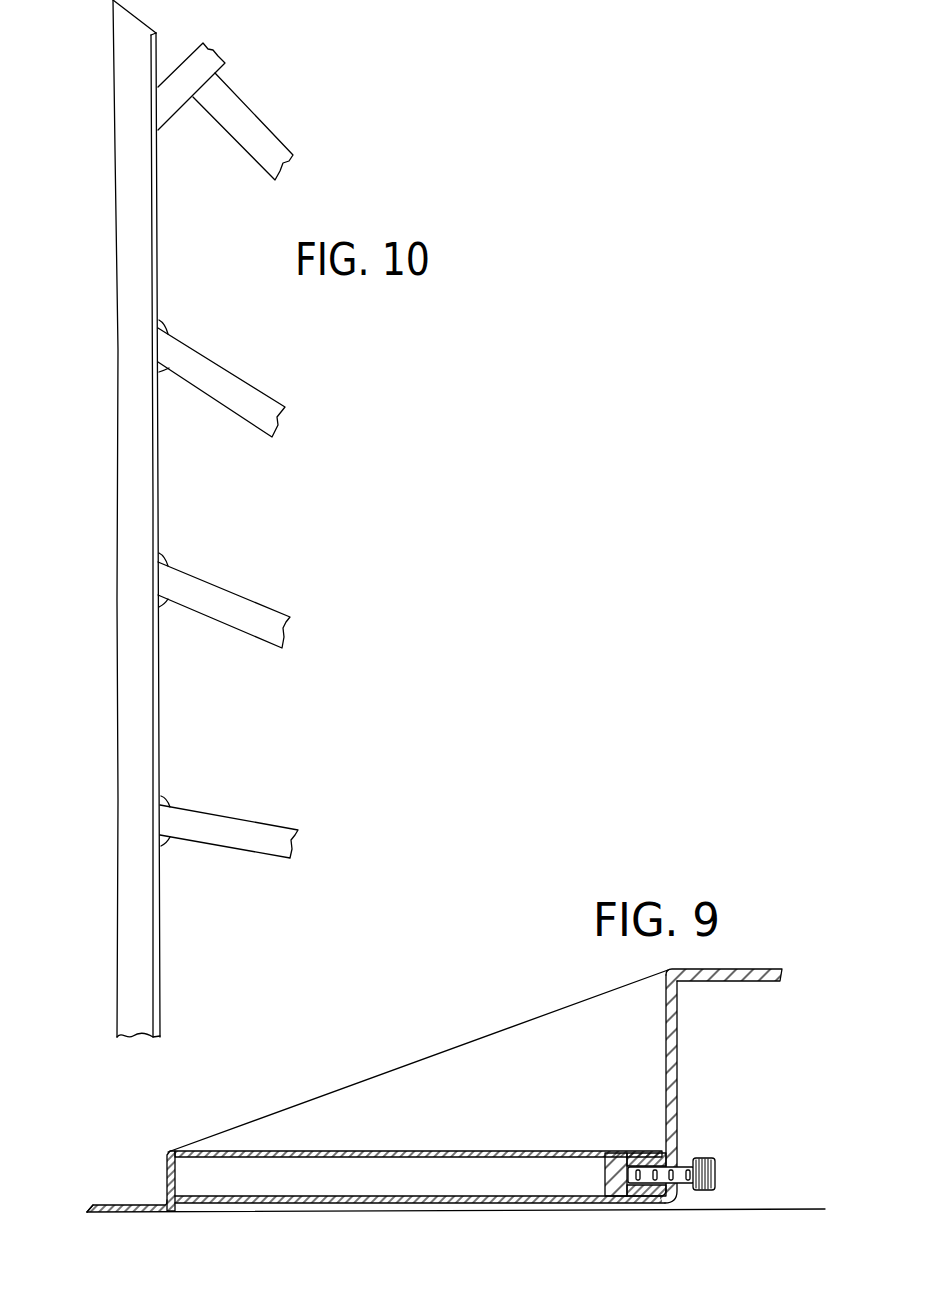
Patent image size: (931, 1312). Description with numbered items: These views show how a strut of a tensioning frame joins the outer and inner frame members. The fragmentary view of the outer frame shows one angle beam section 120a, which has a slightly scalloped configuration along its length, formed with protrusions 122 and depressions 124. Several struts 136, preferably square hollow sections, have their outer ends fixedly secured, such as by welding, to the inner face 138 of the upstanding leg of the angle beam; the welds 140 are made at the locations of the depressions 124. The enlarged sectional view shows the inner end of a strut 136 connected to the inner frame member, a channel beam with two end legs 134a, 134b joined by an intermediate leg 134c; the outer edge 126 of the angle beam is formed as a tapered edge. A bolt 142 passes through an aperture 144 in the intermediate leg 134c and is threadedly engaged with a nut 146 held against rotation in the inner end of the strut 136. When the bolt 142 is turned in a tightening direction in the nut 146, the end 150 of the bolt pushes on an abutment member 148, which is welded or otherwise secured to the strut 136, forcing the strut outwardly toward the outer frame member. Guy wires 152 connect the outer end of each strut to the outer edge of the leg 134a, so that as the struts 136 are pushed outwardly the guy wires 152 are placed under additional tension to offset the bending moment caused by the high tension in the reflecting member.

In FIG. 10, the protrusions 122 is at (114, 240).
In FIG. 10, the depressions 124 is at (119, 338).
In FIG. 10, the struts 136 is at (248, 156).
In FIG. 9, the struts 136 is at (350, 1151).
In FIG. 10, the welds 140 is at (165, 369).
In FIG. 9, the angle beam section 120a is at (135, 1208).
In FIG. 9, the outer edge 126 is at (95, 1208).
In FIG. 9, the inner face 138 is at (176, 1180).
In FIG. 9, the guy wires 152 is at (483, 1035).
In FIG. 9, the end leg 134a is at (737, 982).
In FIG. 9, the end leg 134b is at (573, 1210).
In FIG. 9, the intermediate leg 134c is at (663, 1060).
In FIG. 9, the abutment member 148 is at (605, 1175).
In FIG. 9, the end of the bolt 150 is at (642, 1163).
In FIG. 9, the nut 146 is at (655, 1150).
In FIG. 9, the aperture 144 is at (678, 1163).
In FIG. 9, the bolt 142 is at (715, 1171).